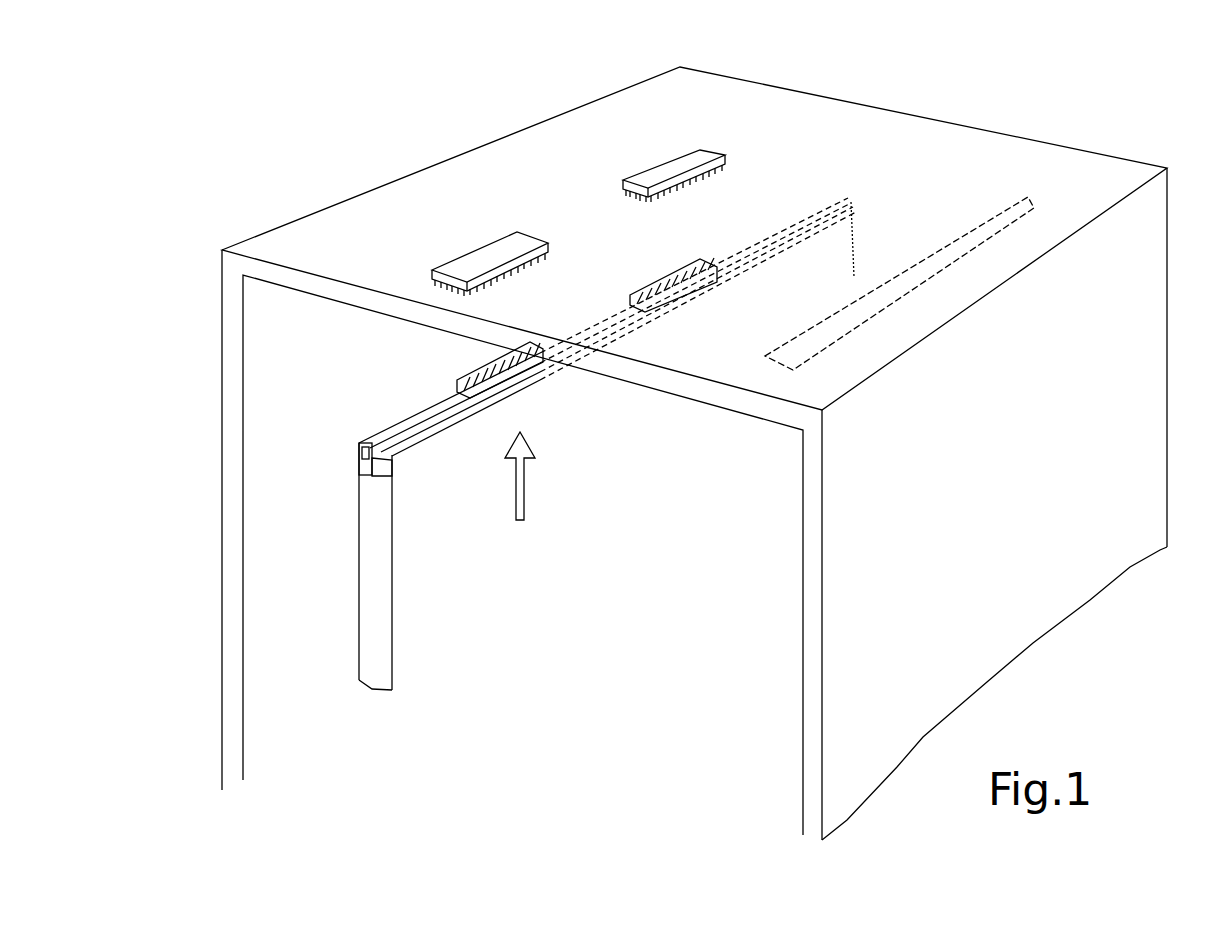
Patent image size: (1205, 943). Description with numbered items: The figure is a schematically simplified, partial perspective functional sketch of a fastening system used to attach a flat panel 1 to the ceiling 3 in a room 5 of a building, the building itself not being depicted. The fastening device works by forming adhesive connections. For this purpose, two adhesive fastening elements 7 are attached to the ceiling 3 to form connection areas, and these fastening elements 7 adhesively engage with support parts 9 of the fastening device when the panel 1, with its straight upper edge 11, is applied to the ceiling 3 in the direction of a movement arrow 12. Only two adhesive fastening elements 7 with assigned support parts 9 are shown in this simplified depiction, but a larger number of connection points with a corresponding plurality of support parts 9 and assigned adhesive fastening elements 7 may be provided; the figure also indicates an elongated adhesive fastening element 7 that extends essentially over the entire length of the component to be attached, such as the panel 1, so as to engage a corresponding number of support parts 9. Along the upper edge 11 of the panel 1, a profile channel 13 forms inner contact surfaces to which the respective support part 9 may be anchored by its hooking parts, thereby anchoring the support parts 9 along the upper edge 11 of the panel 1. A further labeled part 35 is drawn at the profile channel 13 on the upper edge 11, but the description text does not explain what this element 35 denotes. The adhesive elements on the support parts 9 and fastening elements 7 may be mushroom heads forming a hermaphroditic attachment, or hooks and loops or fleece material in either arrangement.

The flat panel 1 is at (433, 592).
The ceiling 3 is at (315, 283).
The room 5 is at (678, 577).
The adhesive fastening element 7 is at (500, 241).
The support part 9 is at (483, 367).
The upper edge 11 is at (440, 430).
The movement arrow 12 is at (530, 468).
The profile channel 13 is at (357, 475).
The guide rail 35 is at (393, 425).